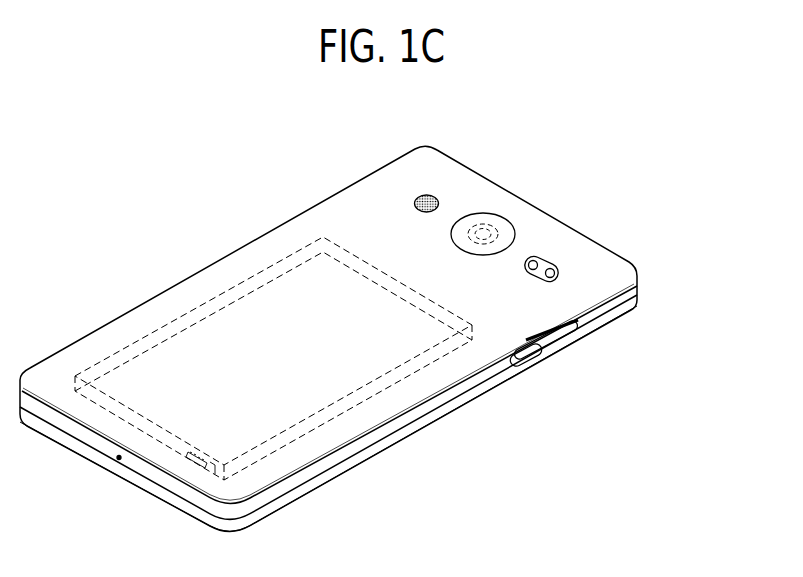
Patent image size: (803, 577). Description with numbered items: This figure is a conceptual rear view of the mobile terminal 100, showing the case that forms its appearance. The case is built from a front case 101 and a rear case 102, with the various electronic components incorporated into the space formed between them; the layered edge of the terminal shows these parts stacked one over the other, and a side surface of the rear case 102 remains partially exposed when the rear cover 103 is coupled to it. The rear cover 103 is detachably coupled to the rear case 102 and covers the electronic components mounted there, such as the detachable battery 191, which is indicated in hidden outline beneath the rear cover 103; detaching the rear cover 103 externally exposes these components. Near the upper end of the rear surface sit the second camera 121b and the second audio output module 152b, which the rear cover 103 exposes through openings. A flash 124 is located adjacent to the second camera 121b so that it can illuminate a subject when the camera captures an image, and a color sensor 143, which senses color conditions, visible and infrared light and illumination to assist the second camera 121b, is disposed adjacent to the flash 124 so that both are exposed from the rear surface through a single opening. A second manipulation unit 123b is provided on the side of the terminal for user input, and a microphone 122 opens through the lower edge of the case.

The mobile terminal 100 is at (212, 237).
The front case 101 is at (636, 300).
The rear case 102 is at (634, 283).
The rear cover 103 is at (635, 263).
The second camera 121b is at (484, 233).
The microphone 122 is at (117, 460).
The second manipulation unit 123b is at (534, 350).
The flash 124 is at (557, 270).
The color sensor 143 is at (545, 266).
The second audio output module 152b is at (433, 198).
The battery 191 is at (354, 408).